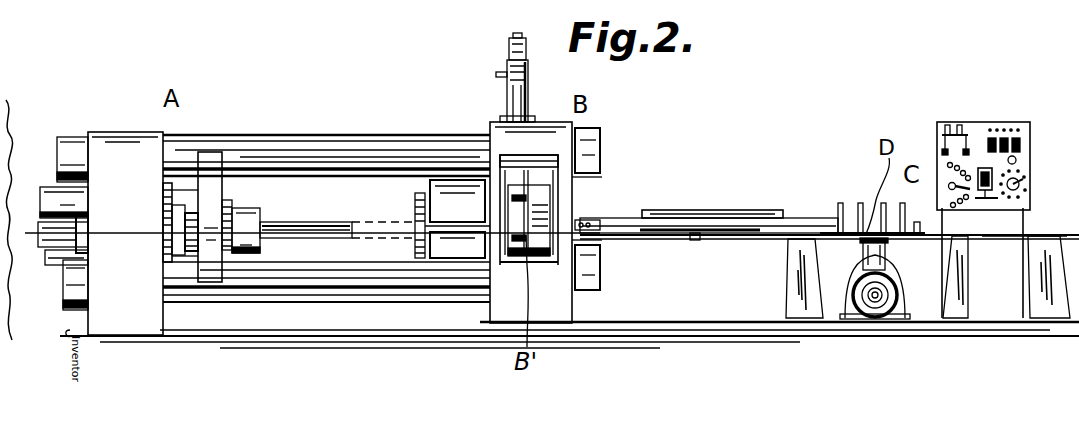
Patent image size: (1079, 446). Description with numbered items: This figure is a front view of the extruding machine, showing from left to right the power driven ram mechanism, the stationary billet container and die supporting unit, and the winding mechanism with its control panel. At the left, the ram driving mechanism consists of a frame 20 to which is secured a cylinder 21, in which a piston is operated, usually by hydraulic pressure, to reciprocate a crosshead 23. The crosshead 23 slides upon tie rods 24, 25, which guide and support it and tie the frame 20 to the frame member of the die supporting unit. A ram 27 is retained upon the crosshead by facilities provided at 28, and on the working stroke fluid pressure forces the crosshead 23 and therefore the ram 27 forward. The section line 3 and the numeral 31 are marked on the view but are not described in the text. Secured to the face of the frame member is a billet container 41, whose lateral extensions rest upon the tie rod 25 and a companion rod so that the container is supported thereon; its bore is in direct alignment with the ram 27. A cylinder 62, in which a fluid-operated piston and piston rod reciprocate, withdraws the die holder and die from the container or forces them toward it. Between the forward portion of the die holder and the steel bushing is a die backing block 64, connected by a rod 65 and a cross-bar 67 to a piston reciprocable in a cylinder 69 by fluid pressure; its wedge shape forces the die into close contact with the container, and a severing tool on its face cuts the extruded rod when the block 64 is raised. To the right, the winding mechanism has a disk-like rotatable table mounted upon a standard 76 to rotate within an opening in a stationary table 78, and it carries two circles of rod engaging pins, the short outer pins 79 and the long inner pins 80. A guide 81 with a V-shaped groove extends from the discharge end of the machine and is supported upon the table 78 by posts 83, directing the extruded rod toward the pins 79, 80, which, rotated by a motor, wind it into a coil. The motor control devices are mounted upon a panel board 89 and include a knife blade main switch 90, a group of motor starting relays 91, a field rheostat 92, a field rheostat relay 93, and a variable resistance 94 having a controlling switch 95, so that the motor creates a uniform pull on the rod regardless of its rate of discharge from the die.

The section line 3- 3 is at (30, 222).
The frame 20 is at (112, 150).
The cylinder 21 is at (54, 200).
The crosshead 23 is at (207, 162).
The tie rod 24 is at (286, 150).
The tie rod 25 is at (289, 280).
The ram 27 is at (302, 228).
The ram retaining facilities 28 is at (246, 218).
The lower pulley 31 is at (48, 250).
The billet container 41 is at (418, 204).
The cylinder 62 is at (704, 215).
The die backing block 64 is at (548, 210).
The rod 65 is at (510, 110).
The cross-bar 67 is at (510, 62).
The cylinder 69 is at (526, 100).
The standard 76 is at (858, 278).
The stationary table 78 is at (760, 238).
The short outer pins 79 is at (917, 222).
The long inner pins 80 is at (842, 205).
The guide 81 is at (808, 220).
The posts 83 is at (697, 241).
The panel board 89 is at (1002, 133).
The knife blade main switch 90 is at (948, 128).
The motor starting relays 91 is at (1014, 140).
The field rheostat 92 is at (950, 184).
The field rheostat relay 93 is at (985, 166).
The variable resistance 94 is at (1020, 184).
The controlling switch 95 is at (1017, 160).